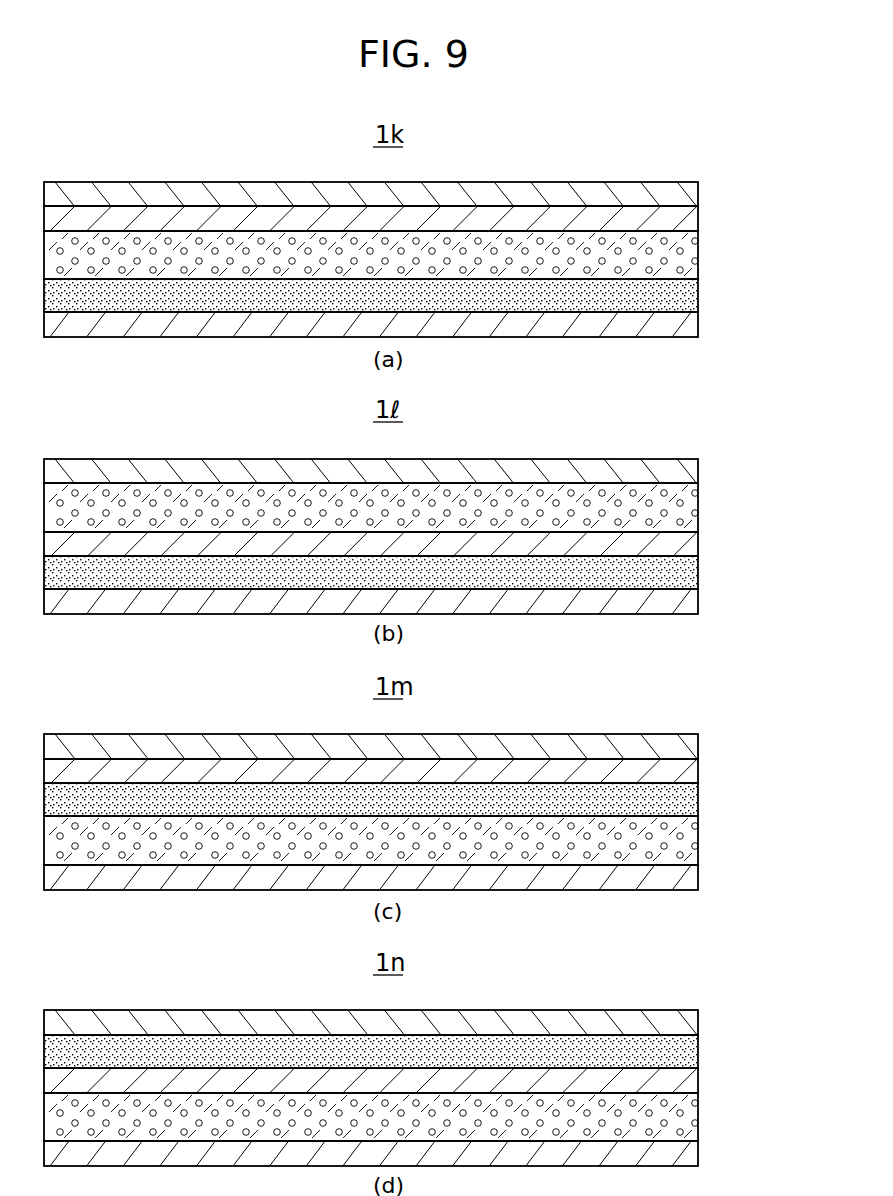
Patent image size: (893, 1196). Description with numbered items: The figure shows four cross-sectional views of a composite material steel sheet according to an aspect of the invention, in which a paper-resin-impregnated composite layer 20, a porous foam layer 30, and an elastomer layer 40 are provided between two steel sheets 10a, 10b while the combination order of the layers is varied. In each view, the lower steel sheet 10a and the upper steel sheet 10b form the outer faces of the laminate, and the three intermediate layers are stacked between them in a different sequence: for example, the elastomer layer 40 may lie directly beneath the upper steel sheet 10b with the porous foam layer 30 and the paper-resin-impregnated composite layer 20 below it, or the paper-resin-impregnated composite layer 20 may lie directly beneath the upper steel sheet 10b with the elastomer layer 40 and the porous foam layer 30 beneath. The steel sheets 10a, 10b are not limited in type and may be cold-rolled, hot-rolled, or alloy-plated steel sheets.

The steel sheet 10a is at (688, 332).
The steel sheet 10b is at (690, 199).
The paper-resin-impregnated composite layer 20 is at (703, 282).
The porous foam layer 30 is at (688, 260).
The elastomer layer 40 is at (688, 224).